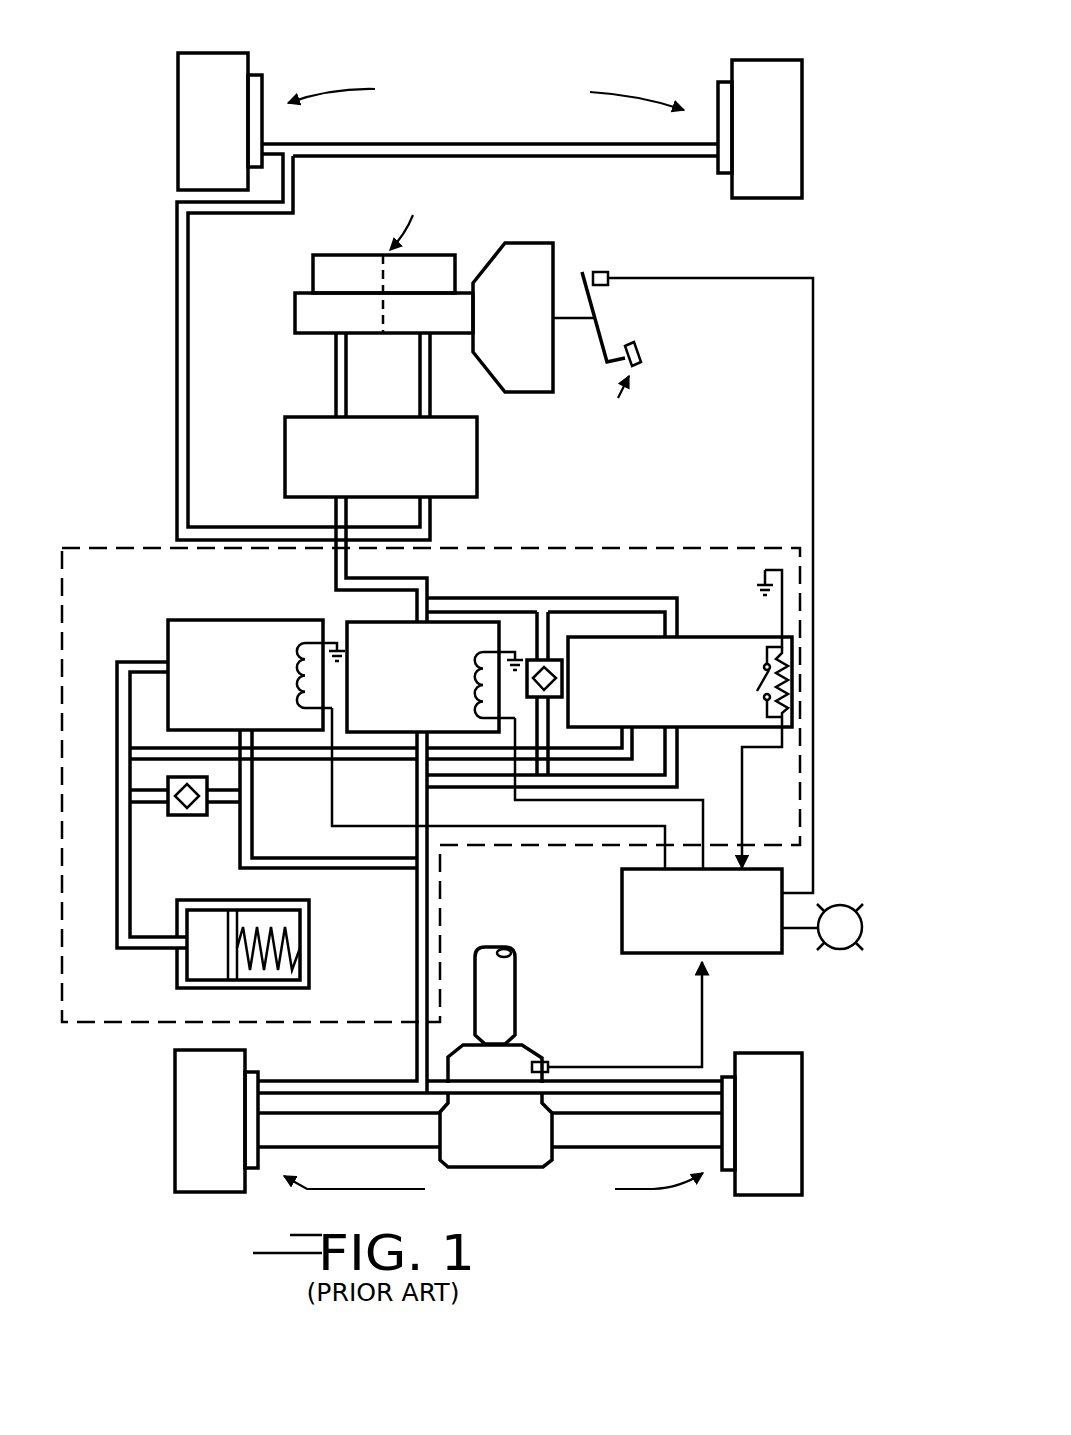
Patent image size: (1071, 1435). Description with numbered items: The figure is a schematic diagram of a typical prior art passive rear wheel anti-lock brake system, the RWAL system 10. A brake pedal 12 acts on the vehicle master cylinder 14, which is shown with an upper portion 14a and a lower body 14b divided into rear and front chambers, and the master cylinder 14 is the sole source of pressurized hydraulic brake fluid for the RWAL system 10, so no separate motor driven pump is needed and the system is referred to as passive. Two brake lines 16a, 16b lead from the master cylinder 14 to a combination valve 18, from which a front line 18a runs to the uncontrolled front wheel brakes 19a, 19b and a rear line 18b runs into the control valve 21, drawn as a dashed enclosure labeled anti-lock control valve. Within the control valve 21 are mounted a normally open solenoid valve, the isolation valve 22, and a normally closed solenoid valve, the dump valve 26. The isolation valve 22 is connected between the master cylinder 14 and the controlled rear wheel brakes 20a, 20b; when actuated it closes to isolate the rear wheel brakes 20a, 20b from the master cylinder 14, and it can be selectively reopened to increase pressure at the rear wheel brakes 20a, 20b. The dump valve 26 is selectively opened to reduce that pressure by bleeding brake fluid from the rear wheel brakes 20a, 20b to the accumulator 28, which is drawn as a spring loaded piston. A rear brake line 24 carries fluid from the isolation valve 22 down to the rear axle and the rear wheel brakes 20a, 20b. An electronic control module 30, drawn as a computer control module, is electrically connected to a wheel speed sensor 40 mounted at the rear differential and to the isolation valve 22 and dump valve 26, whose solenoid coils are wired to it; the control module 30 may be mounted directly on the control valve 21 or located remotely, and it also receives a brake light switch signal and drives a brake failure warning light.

The RWAL system 10 is at (152, 1053).
The brake pedal 12 is at (633, 342).
The master cylinder 14 is at (416, 303).
The master cylinder reservoir 14a is at (418, 254).
The master cylinder body 14b is at (313, 271).
The front brake line 16a is at (430, 401).
The rear brake line 16b is at (336, 383).
The combination valve 18 is at (478, 459).
The front brake line from combination valve 18a is at (177, 405).
The rear brake line from combination valve 18b is at (390, 578).
The front wheel brake 19a is at (263, 130).
The front wheel brake 19b is at (718, 118).
The rear wheel brake 20a is at (258, 1152).
The rear wheel brake 20b is at (723, 1170).
The control valve 21 is at (570, 546).
The isolation valve 22 is at (377, 621).
The rear brake line 24 is at (430, 898).
The dump valve 26 is at (212, 620).
The accumulator 28 is at (256, 893).
The electronic control module 30 is at (622, 907).
The wheel speed sensor 40 is at (550, 1063).